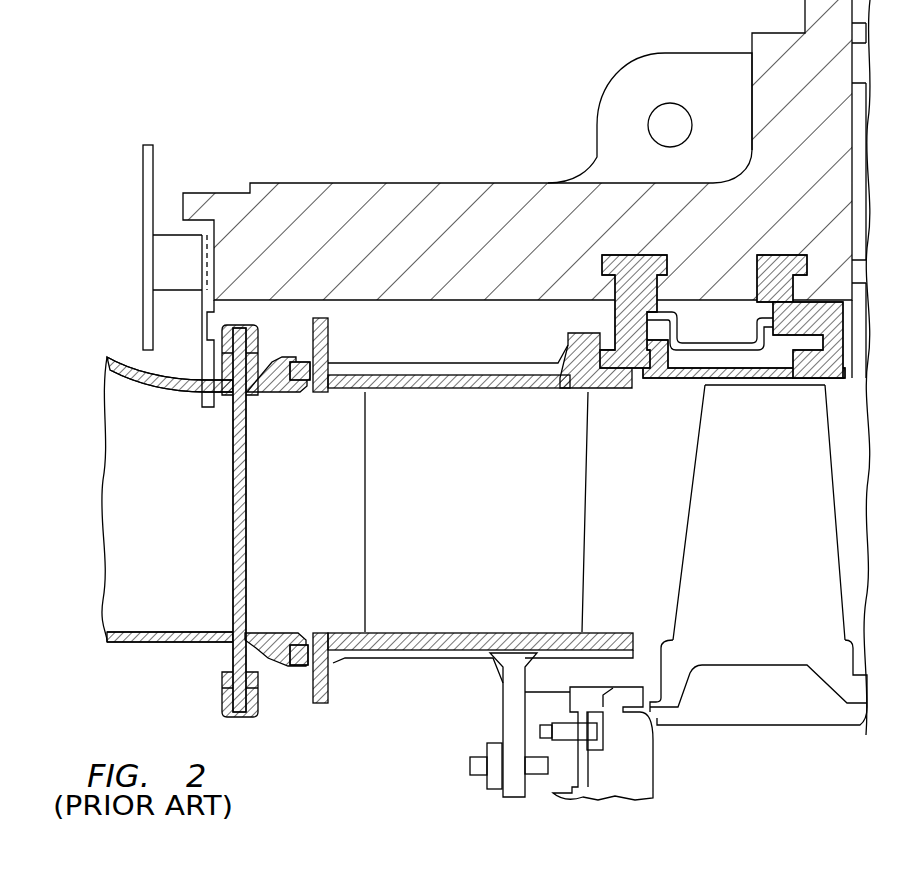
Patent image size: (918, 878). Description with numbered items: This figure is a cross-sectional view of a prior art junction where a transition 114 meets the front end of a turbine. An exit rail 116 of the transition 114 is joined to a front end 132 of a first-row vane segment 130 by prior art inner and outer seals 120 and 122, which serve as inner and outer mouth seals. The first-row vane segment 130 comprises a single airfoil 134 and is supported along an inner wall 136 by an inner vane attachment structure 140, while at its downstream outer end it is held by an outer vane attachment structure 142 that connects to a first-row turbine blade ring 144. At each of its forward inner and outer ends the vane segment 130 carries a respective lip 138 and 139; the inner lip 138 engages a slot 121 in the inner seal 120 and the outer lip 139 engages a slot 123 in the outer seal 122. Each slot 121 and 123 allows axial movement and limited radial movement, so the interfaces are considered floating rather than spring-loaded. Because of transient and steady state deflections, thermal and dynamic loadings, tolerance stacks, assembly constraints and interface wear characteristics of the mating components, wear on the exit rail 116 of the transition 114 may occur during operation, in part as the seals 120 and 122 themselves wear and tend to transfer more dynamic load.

The transition 114 is at (188, 522).
The exit rail 116 is at (200, 378).
The inner seal 120 is at (247, 632).
The slot 121 is at (293, 666).
The outer seal 122 is at (268, 392).
The slot 123 is at (292, 355).
The row 1 vane segment 130 is at (574, 392).
The front end 132 is at (324, 392).
The airfoil 134 is at (490, 522).
The inner wall 136 is at (513, 665).
The lip 138 is at (318, 590).
The lip 139 is at (302, 386).
The inner vane attachment structure 140 is at (492, 788).
The outer vane attachment structure 142 is at (637, 273).
The row 1 turbine blade ring 144 is at (490, 258).